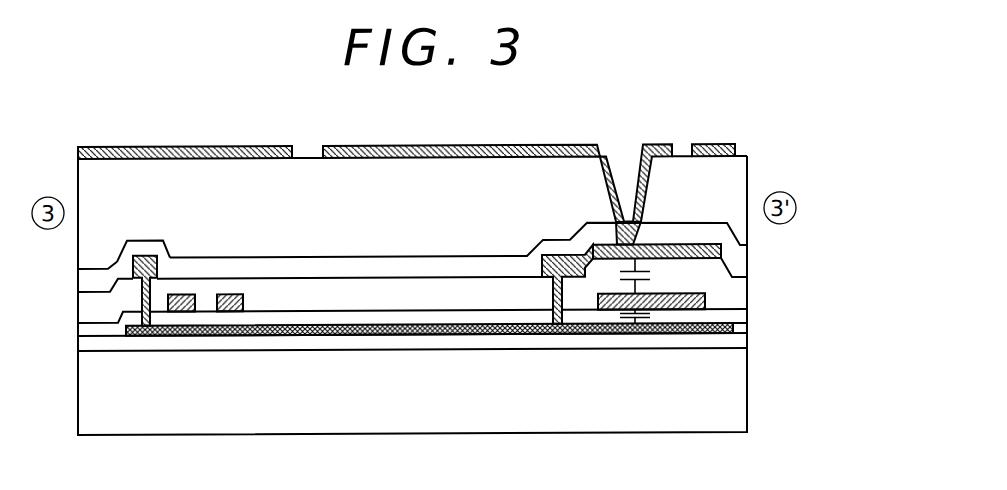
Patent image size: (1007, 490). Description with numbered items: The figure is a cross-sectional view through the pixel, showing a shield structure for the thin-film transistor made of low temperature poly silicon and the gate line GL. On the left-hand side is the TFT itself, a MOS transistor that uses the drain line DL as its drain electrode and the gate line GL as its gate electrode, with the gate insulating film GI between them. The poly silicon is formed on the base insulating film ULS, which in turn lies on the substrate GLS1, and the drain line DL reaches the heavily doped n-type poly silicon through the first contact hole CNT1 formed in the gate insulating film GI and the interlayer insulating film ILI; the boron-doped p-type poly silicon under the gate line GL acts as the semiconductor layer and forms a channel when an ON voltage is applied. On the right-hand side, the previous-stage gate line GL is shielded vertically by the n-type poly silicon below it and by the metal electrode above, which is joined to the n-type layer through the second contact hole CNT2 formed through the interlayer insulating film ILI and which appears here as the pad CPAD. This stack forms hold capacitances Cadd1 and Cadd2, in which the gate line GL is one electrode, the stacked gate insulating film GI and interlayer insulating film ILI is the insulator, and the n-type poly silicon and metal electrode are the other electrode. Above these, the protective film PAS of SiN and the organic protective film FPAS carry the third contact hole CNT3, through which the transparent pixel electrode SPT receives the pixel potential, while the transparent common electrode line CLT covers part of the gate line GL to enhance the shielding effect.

The drain line DL is at (140, 256).
The first contact hole CNT1 is at (147, 232).
The gate line GL is at (229, 295).
The transparent common electrode line CLT is at (268, 147).
The transparent pixel electrode SPT is at (375, 148).
The second contact hole CNT2 is at (558, 230).
The third contact hole CNT3 is at (622, 182).
The capacitor pad electrode CPAD is at (673, 247).
The organic protective film FPAS is at (732, 191).
The protective film PAS is at (738, 262).
The interlayer insulating film ILI is at (738, 300).
The gate insulating film GI is at (738, 321).
The base insulating film ULS is at (735, 345).
The first glass substrate GLS1 is at (733, 393).
The second additional capacitance Cadd2 is at (668, 276).
The first additional capacitance Cadd1 is at (672, 323).